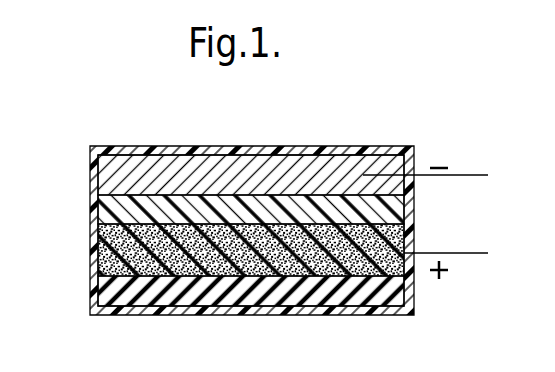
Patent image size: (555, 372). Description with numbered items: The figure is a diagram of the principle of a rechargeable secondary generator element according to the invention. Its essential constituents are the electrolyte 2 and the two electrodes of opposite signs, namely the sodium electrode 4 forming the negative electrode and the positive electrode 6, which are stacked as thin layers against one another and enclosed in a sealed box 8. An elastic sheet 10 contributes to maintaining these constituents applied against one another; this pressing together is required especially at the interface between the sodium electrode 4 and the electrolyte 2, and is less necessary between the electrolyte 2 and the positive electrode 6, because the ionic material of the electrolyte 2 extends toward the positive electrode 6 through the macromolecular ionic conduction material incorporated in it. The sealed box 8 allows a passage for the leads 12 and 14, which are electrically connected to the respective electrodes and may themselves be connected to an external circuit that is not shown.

The electrolyte 2 is at (110, 208).
The sodium electrode 4 is at (117, 168).
The positive electrode 6 is at (103, 273).
The sealed box 8 is at (225, 147).
The elastic sheet 10 is at (293, 287).
The lead 12 is at (468, 175).
The lead 14 is at (462, 253).